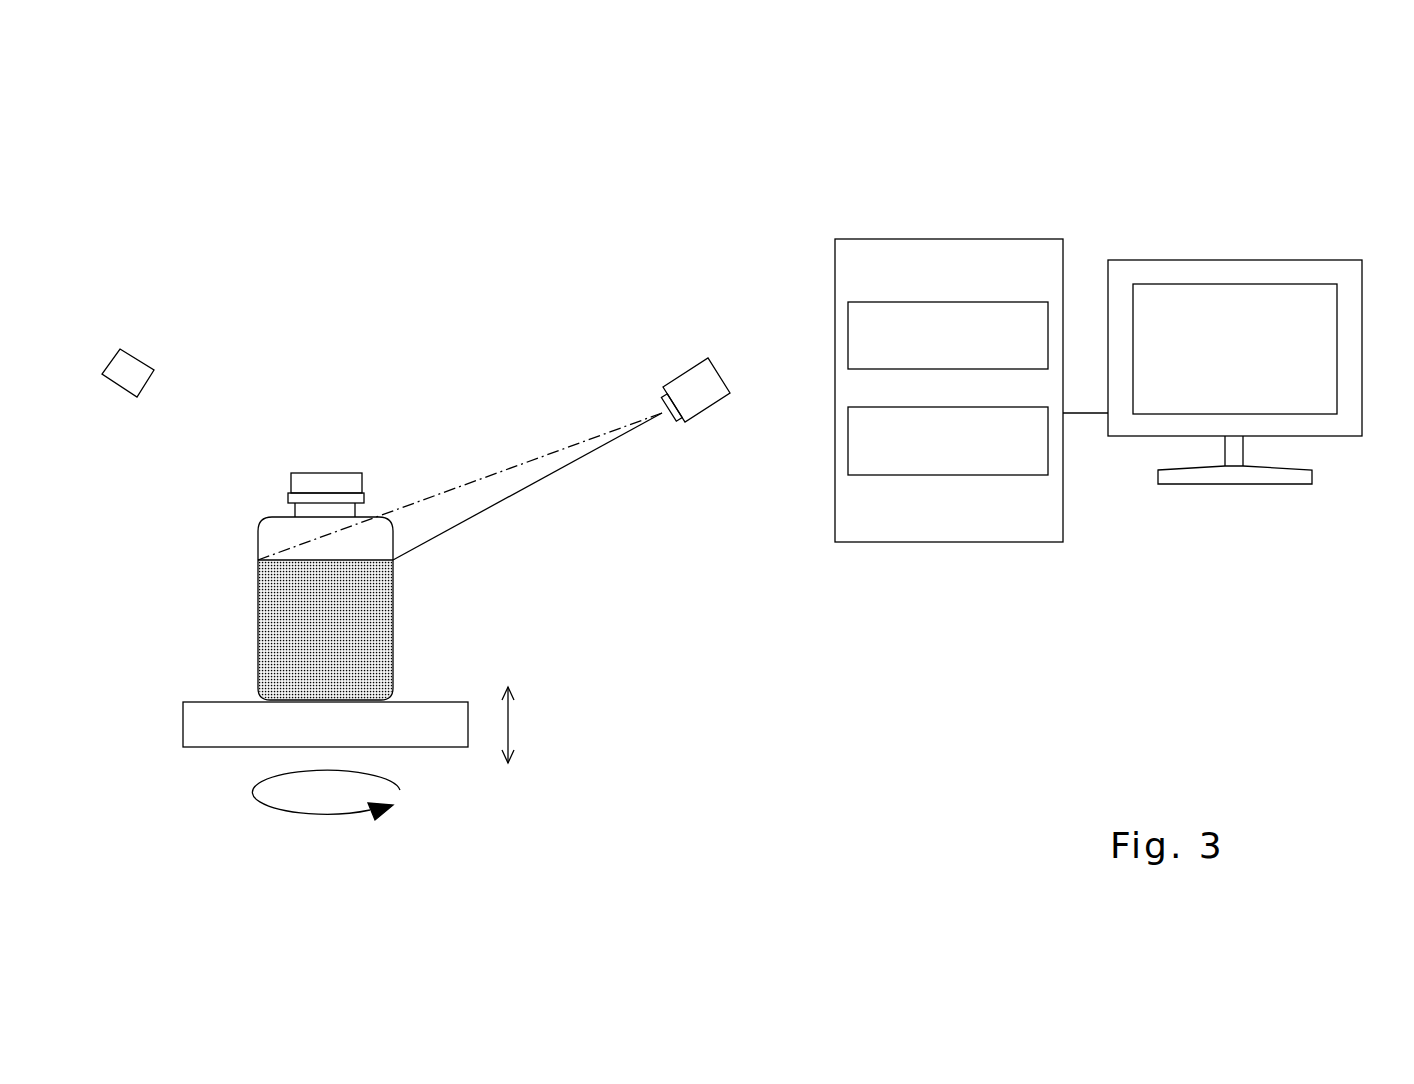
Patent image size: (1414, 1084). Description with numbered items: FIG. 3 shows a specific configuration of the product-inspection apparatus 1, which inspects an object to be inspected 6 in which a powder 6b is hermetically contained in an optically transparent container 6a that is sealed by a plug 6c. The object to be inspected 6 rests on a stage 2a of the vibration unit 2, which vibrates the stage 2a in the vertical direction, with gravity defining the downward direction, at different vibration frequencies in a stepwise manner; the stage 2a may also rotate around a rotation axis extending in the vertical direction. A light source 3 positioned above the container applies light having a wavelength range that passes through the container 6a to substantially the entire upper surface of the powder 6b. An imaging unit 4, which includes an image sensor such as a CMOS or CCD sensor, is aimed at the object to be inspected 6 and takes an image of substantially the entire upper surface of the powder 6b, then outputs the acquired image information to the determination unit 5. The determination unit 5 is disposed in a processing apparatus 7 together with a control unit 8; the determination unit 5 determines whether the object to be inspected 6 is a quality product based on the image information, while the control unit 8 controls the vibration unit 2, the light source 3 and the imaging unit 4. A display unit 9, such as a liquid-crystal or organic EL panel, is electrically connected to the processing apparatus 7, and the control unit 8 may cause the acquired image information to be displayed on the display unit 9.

The product-inspection apparatus 1 is at (1336, 159).
The vibration unit 2 is at (299, 753).
The stage 2a is at (183, 722).
The light source 3 is at (133, 362).
The imaging unit 4 is at (688, 378).
The determination unit 5 is at (848, 331).
The object to be inspected 6 is at (339, 579).
The container 6a is at (393, 594).
The powder 6b is at (258, 625).
The plug 6c is at (288, 487).
The processing apparatus 7 is at (835, 262).
The control unit 8 is at (848, 438).
The display unit 9 is at (1355, 355).